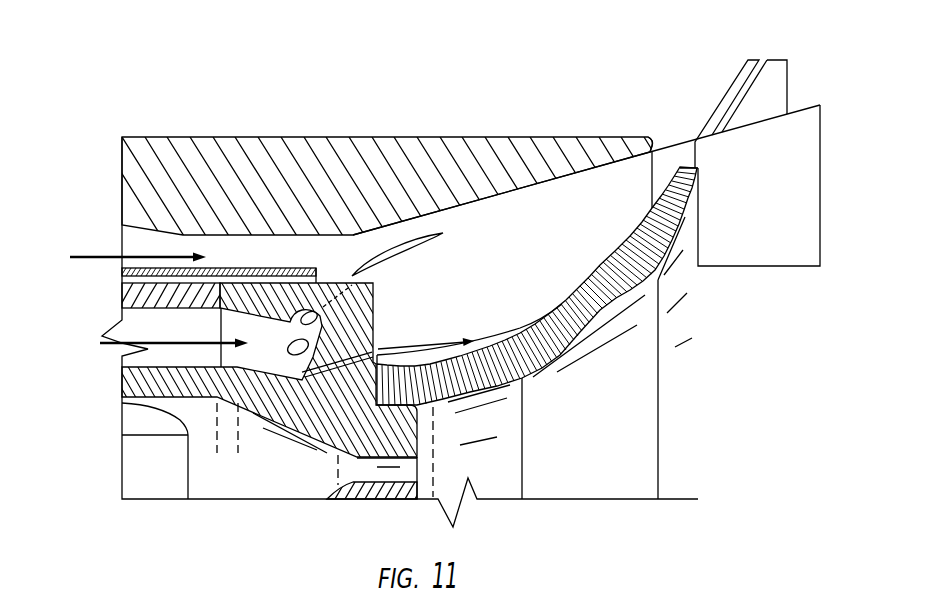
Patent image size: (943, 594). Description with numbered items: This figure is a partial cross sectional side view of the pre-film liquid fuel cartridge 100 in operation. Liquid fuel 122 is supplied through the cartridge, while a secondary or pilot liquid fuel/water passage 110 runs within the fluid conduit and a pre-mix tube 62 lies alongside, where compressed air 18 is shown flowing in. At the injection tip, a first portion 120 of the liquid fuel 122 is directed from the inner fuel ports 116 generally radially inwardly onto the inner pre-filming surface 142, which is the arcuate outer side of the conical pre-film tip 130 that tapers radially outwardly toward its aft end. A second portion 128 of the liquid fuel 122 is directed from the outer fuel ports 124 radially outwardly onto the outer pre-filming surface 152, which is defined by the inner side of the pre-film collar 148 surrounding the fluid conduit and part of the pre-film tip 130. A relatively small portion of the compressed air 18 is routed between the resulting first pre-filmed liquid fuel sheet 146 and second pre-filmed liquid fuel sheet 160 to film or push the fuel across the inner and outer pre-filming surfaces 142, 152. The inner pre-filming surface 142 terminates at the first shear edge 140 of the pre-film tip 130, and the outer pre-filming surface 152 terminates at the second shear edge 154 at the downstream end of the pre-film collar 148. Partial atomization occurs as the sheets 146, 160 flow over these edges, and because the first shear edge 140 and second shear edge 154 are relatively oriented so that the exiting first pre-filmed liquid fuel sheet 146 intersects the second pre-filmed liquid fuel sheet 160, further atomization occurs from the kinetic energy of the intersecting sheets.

The pre-film liquid fuel cartridge 100 is at (175, 76).
The pre-film collar 148 is at (297, 152).
The outer pre-filming surface 152 is at (500, 183).
The second shear edge 154 is at (650, 150).
The first pre-filmed liquid fuel sheet 146 is at (730, 82).
The second pre-filmed liquid fuel sheet 160 is at (737, 267).
The pre-mix tube 62 is at (244, 262).
The compressed air 18 is at (102, 259).
The secondary or pilot liquid fuel/water passage 110 is at (248, 485).
The liquid fuel 122 is at (112, 350).
The inner fuel ports 116 is at (318, 378).
The outer fuel ports 124 is at (312, 312).
The second portion of the liquid fuel 128 is at (382, 266).
The first portion of the liquid fuel 120 is at (400, 347).
The first shear edge 140 is at (637, 233).
The inner pre-filming surface 142 is at (572, 314).
The pre-film tip 130 is at (686, 412).